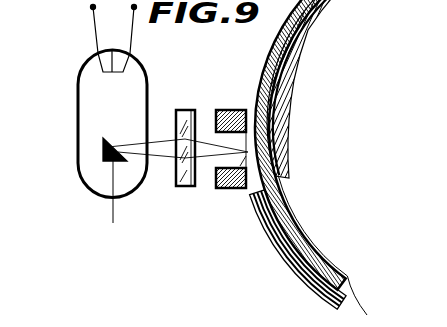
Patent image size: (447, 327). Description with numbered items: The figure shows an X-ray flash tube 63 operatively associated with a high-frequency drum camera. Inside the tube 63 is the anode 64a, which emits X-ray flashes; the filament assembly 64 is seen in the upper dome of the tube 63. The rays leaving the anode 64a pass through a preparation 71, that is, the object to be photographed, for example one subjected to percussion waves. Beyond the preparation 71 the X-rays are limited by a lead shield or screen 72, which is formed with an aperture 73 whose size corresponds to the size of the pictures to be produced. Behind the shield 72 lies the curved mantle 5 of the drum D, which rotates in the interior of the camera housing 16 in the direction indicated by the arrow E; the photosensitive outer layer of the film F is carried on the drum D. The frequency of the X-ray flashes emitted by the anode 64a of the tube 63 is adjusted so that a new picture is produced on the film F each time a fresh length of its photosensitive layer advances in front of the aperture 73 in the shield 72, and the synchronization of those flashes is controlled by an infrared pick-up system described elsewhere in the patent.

The mantle 5 is at (286, 205).
The camera housing 16 is at (281, 254).
The X-ray tube 63 is at (78, 107).
The filament 64 is at (112, 50).
The anode 64a is at (103, 152).
The preparation 71 is at (184, 187).
The lead shield or screen 72 is at (225, 110).
The aperture 73 is at (236, 189).
The drum D is at (321, 254).
The arrow E is at (331, 28).
The film F is at (359, 306).